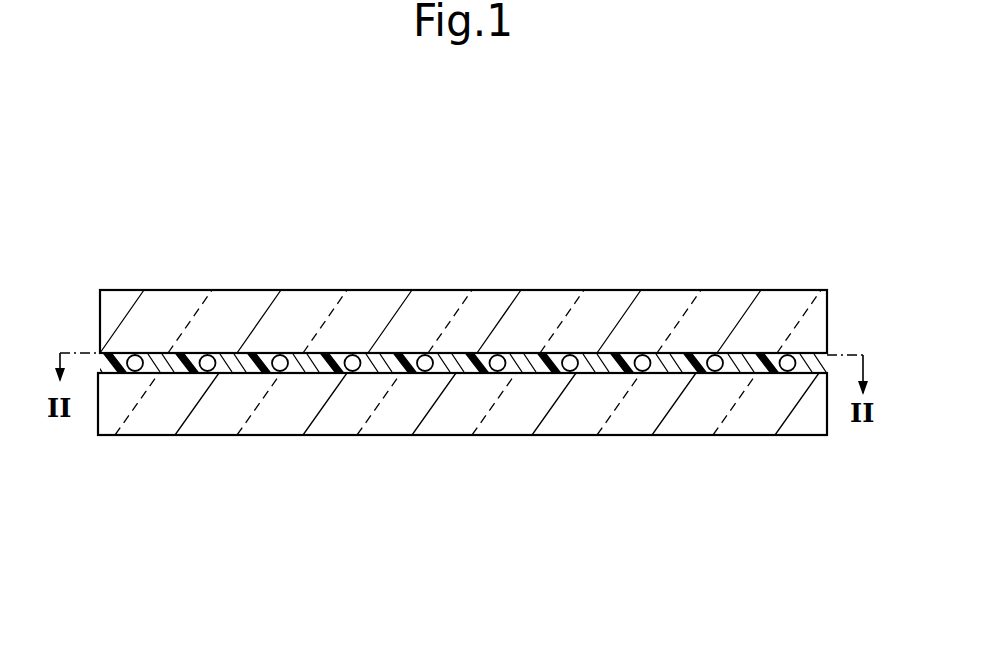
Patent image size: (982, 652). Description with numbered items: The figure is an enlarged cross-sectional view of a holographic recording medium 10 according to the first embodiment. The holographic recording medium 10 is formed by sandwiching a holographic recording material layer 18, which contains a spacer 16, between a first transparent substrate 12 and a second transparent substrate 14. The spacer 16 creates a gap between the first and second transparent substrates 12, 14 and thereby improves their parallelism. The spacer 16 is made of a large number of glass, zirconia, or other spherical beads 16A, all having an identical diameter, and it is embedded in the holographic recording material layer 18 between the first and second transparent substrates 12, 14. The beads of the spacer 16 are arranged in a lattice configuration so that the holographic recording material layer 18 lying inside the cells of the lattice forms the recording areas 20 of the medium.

The holographic recording medium 10 is at (509, 222).
The first transparent substrate 12 is at (300, 402).
The second transparent substrate 14 is at (578, 321).
The spacer 16 is at (129, 377).
The spherical bead 16A is at (424, 361).
The holographic recording material layer 18 is at (238, 366).
The recording area 20 is at (167, 362).